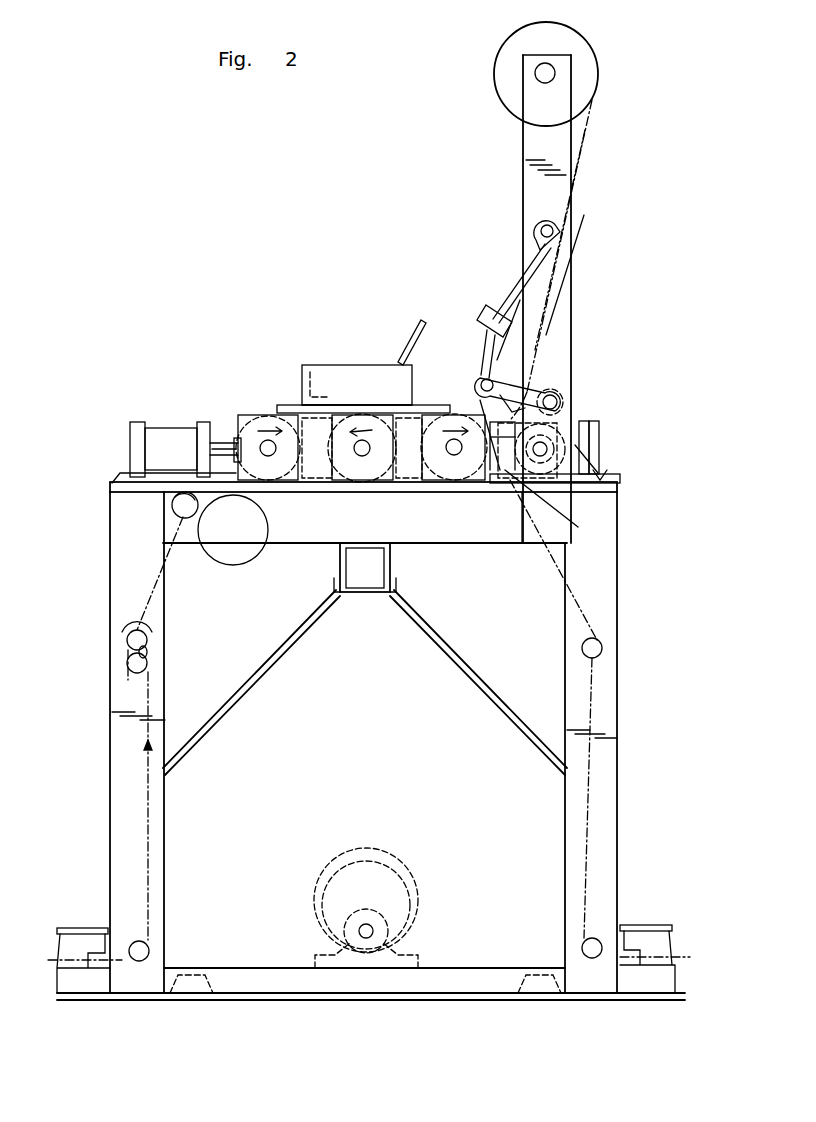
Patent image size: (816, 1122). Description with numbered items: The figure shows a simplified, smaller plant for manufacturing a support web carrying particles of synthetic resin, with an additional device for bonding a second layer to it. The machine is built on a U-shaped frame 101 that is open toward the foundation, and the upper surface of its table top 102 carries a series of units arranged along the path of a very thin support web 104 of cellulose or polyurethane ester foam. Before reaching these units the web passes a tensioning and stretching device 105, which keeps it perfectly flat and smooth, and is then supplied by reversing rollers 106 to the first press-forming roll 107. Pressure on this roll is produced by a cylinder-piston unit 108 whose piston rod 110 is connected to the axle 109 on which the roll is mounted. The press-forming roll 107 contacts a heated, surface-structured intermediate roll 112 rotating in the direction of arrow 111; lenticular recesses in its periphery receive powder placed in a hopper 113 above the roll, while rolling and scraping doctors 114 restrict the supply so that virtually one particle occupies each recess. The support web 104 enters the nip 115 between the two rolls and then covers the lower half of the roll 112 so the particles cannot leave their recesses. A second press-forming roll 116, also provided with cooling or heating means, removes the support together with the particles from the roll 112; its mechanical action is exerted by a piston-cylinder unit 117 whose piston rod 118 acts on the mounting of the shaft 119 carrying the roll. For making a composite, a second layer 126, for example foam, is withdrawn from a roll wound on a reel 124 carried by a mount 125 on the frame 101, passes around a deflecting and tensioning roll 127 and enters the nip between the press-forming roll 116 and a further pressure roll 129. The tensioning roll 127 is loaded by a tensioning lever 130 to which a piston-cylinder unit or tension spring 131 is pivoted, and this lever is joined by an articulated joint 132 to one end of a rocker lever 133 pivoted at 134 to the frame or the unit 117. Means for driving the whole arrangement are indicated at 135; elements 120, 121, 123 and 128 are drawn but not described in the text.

The U-shaped frame 101 is at (168, 803).
The table top 102 is at (605, 470).
The support web 104 is at (150, 838).
The tensioning and stretching device 105 is at (128, 640).
The reversing rollers 106 is at (218, 553).
The first press-forming roll 107 is at (222, 437).
The cylinder-piston unit 108 is at (158, 423).
The axle 109 is at (237, 420).
The piston rod 110 is at (212, 423).
The arrow 111 is at (360, 445).
The surface-structured intermediate roll 112 is at (345, 505).
The hopper 113 is at (273, 440).
The rolling and scraping doctors 114 is at (405, 355).
The nip 115 is at (250, 417).
The press-forming roll 116 is at (458, 480).
The piston-cylinder unit 117 is at (598, 425).
The piston rod 118 is at (578, 527).
The shaft 119 is at (352, 368).
The belt 120 is at (562, 570).
The guide roller 121 is at (592, 648).
The lower guide roller 123 is at (632, 958).
The reel 124 is at (495, 73).
The mount 125 is at (523, 137).
The layer of the composite material 126 is at (560, 270).
The deflecting and tensioning roll 127 is at (560, 325).
The pivot 128 is at (487, 385).
The pressure roll 129 is at (548, 400).
The tensioning lever 130 is at (512, 288).
The piston-cylinder unit or tension spring 131 is at (520, 312).
The articulated joint 132 is at (560, 388).
The rocker lever 133 is at (600, 462).
The pivot 134 is at (598, 475).
The driving means 135 is at (365, 850).